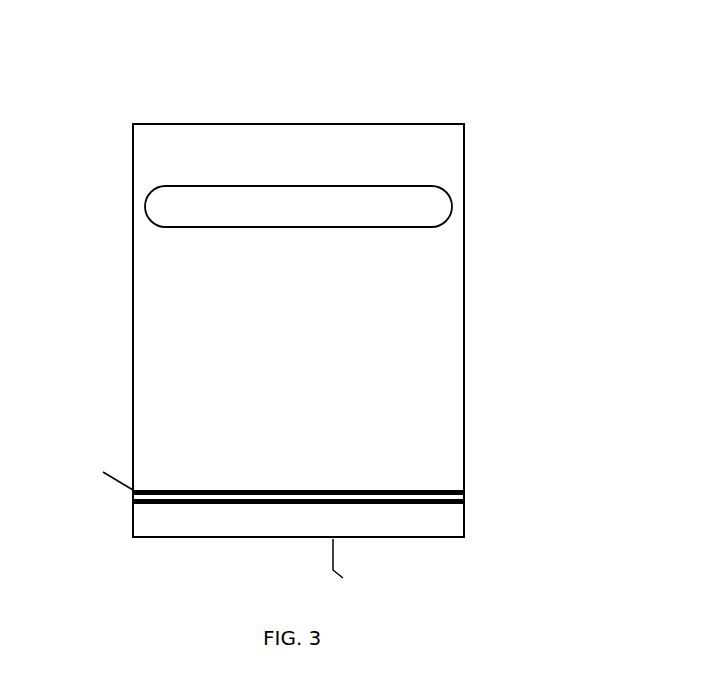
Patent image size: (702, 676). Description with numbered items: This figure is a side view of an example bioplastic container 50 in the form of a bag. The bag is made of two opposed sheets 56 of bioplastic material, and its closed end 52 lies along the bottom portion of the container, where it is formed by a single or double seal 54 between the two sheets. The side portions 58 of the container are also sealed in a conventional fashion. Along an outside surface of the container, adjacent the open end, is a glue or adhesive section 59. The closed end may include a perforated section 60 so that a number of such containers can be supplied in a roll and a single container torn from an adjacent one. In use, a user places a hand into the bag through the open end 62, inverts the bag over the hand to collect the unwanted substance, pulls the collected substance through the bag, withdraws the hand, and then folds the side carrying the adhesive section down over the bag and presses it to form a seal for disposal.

The bioplastic container 50 is at (447, 89).
The closed end 52 is at (165, 512).
The single or double seal 54 is at (440, 487).
The opposed sheets 56 is at (430, 342).
The side portions 58 is at (465, 395).
The glue or adhesive section 59 is at (432, 211).
The perforated section 60 is at (415, 538).
The open end 62 is at (195, 124).